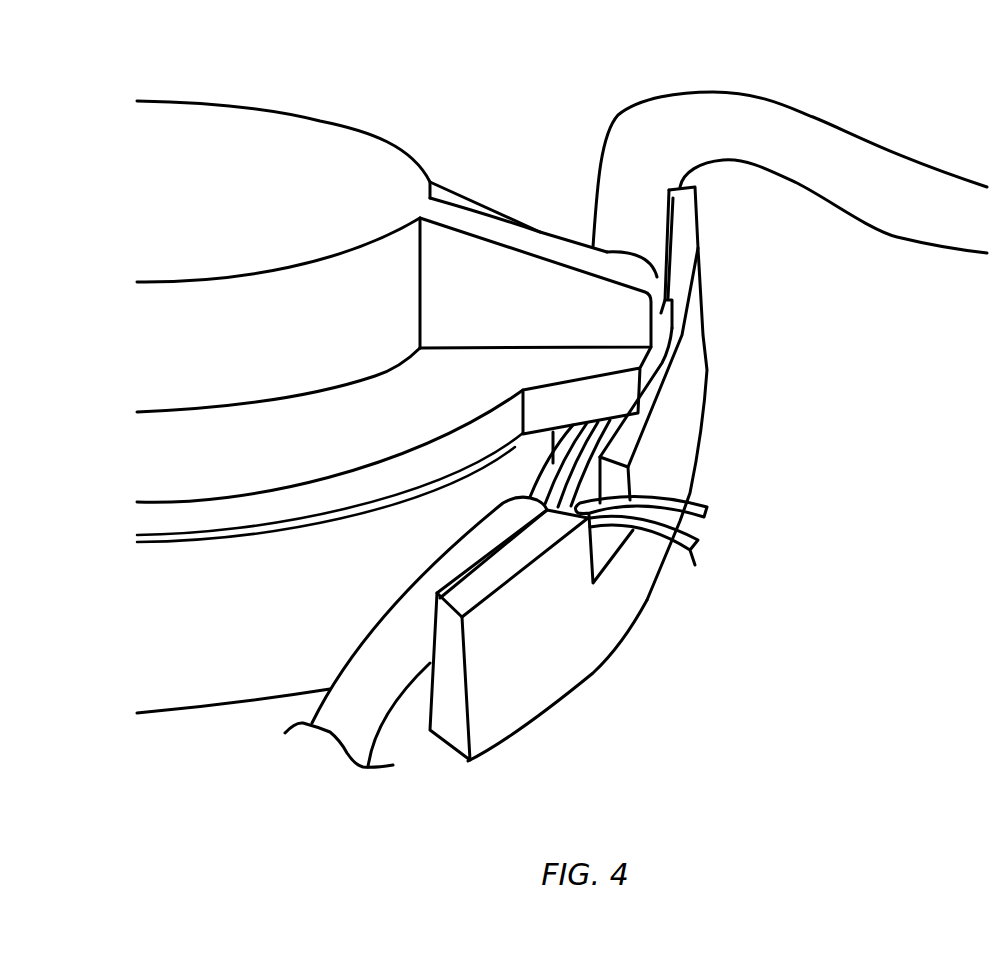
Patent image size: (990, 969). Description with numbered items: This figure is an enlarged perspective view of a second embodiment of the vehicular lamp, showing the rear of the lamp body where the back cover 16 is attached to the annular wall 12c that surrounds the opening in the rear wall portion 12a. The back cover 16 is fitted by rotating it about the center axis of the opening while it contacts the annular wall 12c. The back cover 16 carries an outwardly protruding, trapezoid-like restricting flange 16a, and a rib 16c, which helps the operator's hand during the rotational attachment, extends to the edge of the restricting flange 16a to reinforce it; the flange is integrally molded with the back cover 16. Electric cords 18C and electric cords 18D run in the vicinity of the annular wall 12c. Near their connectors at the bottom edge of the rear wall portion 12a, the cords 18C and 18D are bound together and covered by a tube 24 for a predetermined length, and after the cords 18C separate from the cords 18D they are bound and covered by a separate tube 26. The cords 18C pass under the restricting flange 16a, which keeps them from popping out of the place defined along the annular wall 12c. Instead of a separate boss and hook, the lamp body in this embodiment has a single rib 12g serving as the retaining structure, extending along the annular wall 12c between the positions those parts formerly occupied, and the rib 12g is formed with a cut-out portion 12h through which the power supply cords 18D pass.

The back cover 16 is at (334, 108).
The rib 16c is at (563, 250).
The restricting flange 16a is at (658, 347).
The electric cords 18C is at (612, 482).
The electric cords 18D is at (678, 480).
The annular wall 12c is at (365, 555).
The rear wall portion 12a is at (233, 740).
The tube 24 is at (372, 660).
The rib 12g is at (545, 673).
The cut-out portion 12h is at (602, 555).
The tube 26 is at (857, 160).